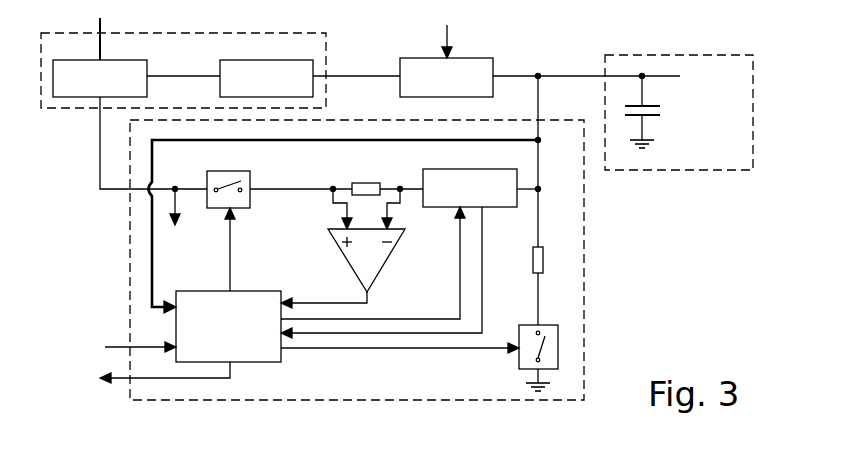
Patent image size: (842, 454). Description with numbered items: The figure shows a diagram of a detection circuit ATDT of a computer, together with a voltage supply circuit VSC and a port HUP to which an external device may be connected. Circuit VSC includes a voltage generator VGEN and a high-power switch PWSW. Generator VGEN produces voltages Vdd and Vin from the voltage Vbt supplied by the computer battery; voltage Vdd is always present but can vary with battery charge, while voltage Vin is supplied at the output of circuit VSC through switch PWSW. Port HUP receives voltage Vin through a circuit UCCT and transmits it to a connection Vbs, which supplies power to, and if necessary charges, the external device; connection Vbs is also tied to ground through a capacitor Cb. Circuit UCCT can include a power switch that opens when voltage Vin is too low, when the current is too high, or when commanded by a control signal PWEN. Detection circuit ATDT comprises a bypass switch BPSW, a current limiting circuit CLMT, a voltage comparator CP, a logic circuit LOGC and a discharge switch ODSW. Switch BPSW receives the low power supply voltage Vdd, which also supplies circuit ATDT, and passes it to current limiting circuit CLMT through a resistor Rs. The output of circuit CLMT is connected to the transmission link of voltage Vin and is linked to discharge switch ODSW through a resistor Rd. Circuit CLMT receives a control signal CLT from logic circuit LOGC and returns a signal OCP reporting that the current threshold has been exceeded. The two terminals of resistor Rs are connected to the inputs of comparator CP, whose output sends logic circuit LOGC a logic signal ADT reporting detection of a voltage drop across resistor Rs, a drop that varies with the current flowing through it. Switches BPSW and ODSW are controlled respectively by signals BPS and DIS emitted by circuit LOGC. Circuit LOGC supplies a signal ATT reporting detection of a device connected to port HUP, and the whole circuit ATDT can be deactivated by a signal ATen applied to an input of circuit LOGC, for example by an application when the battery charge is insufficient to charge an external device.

The battery voltage Vbt is at (99, 30).
The voltage supply circuit VSC is at (183, 70).
The voltage generator VGEN is at (100, 78).
The high-power switch PWSW is at (266, 78).
The input voltage Vin is at (356, 63).
The power enable control signal PWEN is at (442, 29).
The port control circuit UCCT is at (446, 77).
The output connection voltage Vbs is at (607, 76).
The capacitor Cb is at (662, 115).
The port HUP is at (679, 112).
The low power supply voltage Vdd is at (131, 161).
The bypass switch BPSW is at (250, 174).
The bypass switch control signal BPS is at (221, 249).
The sense resistor Rs is at (372, 182).
The voltage comparator CP is at (336, 245).
The detection logic signal ADT is at (324, 294).
The current limiting circuit CLMT is at (482, 188).
The current limit control signal CLT is at (373, 263).
The over-current report signal OCP is at (394, 272).
The logic circuit LOGC is at (228, 326).
The enable signal ATen is at (108, 348).
The device detection signal ATT is at (140, 376).
The detection circuit ATDT is at (357, 260).
The discharge control signal DIS is at (400, 358).
The discharge resistor Rd is at (543, 246).
The discharge switch ODSW is at (558, 344).